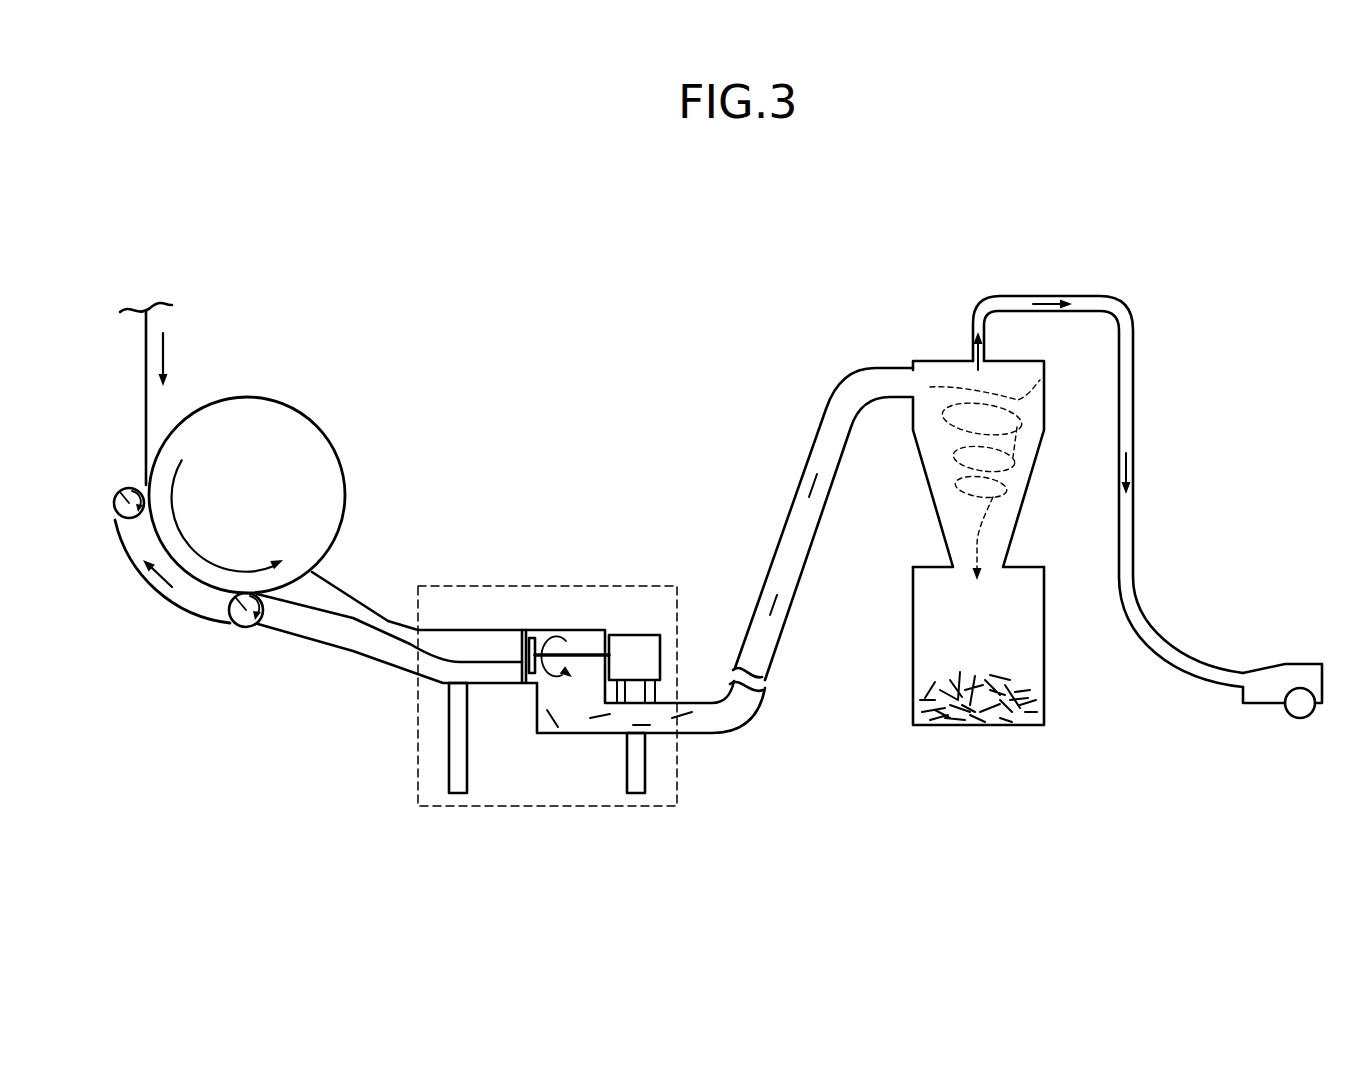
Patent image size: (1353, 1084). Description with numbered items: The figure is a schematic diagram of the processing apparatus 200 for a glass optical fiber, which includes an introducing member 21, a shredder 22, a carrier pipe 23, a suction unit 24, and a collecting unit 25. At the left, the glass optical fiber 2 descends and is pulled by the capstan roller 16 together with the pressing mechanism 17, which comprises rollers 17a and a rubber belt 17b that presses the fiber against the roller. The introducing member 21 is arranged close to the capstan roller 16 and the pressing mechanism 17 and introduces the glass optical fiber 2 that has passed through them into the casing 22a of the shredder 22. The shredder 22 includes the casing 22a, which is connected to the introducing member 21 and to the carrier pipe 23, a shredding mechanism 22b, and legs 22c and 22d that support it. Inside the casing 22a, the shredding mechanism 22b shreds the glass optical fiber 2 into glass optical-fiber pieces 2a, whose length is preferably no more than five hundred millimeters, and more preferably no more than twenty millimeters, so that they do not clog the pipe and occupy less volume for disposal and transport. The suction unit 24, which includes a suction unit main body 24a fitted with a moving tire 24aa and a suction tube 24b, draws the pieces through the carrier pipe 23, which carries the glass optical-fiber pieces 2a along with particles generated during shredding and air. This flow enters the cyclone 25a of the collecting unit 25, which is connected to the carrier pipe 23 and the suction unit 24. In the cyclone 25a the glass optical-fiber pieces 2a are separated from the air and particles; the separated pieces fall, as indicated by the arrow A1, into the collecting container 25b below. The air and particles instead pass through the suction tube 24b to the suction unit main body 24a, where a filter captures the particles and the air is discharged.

The glass optical fiber 2 is at (145, 352).
The glass optical-fiber pieces 2a is at (820, 492).
The capstan roller 16 is at (293, 398).
The pressing mechanism 17 is at (95, 518).
The rollers 17a is at (120, 487).
The rubber belt 17b is at (160, 593).
The introducing member 21 is at (383, 565).
The shredder 22 is at (525, 586).
The casing 22a is at (537, 720).
The shredding mechanism 22b is at (613, 610).
The leg 22c is at (450, 783).
The leg 22d is at (646, 785).
The carrier pipe 23 is at (790, 512).
The suction unit 24 is at (1198, 455).
The suction unit main body 24a is at (1297, 663).
The moving tire 24aa is at (1297, 712).
The suction tube 24b is at (1134, 562).
The collecting unit 25 is at (922, 336).
The cyclone 25a is at (1023, 510).
The collecting container 25b is at (913, 645).
The arrow A1 is at (1040, 380).
The processing apparatus 200 is at (925, 222).